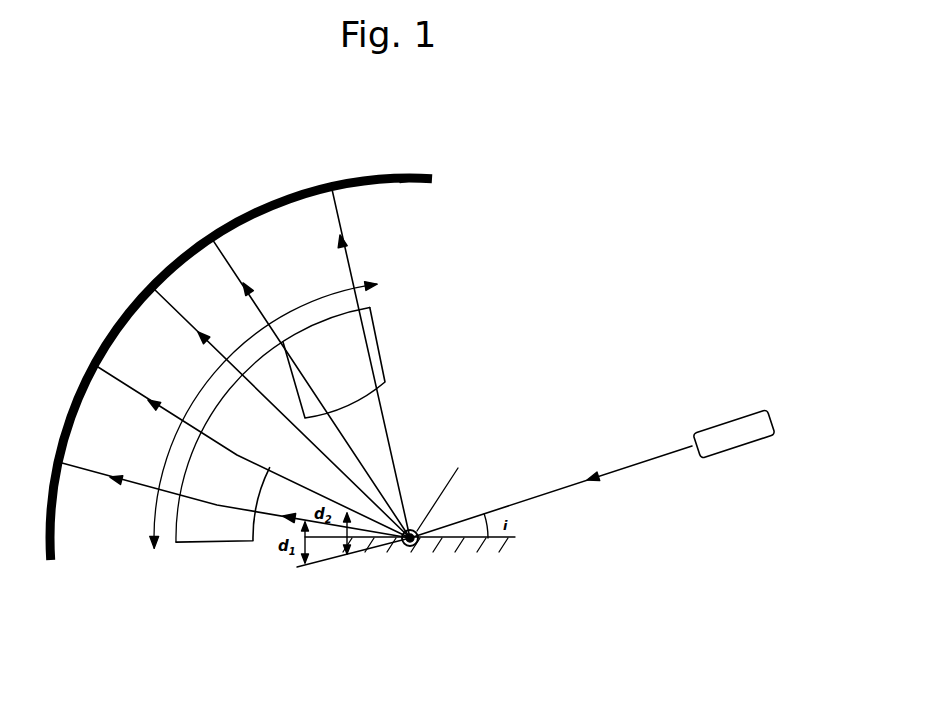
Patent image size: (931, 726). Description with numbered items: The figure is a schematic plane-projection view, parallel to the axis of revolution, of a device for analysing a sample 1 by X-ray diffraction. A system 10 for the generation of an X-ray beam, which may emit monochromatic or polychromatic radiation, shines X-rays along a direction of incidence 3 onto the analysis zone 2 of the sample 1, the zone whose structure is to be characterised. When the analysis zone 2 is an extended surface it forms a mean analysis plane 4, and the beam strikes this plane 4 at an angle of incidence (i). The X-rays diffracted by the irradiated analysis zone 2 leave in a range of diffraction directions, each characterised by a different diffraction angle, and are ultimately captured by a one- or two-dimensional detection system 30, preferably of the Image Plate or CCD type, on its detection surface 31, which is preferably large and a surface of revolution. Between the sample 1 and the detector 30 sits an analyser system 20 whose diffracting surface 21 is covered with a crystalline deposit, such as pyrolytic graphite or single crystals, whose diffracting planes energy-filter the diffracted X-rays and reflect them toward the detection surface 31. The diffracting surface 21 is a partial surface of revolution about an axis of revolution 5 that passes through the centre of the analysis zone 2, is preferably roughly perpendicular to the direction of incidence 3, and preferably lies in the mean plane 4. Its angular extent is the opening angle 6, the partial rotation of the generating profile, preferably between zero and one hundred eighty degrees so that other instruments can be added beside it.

The sample 1 is at (405, 558).
The analysis zone 2 is at (449, 487).
The direction of incidence 3 is at (608, 476).
The mean analysis plane 4 is at (483, 546).
The axis of revolution 5 is at (418, 552).
The opening angle 6 is at (263, 415).
The X-ray beam generation system 10 is at (752, 460).
The analyser system 20 is at (177, 555).
The diffracting surface 21 is at (372, 360).
The detection system 30 is at (197, 237).
The detection surface 31 is at (400, 182).